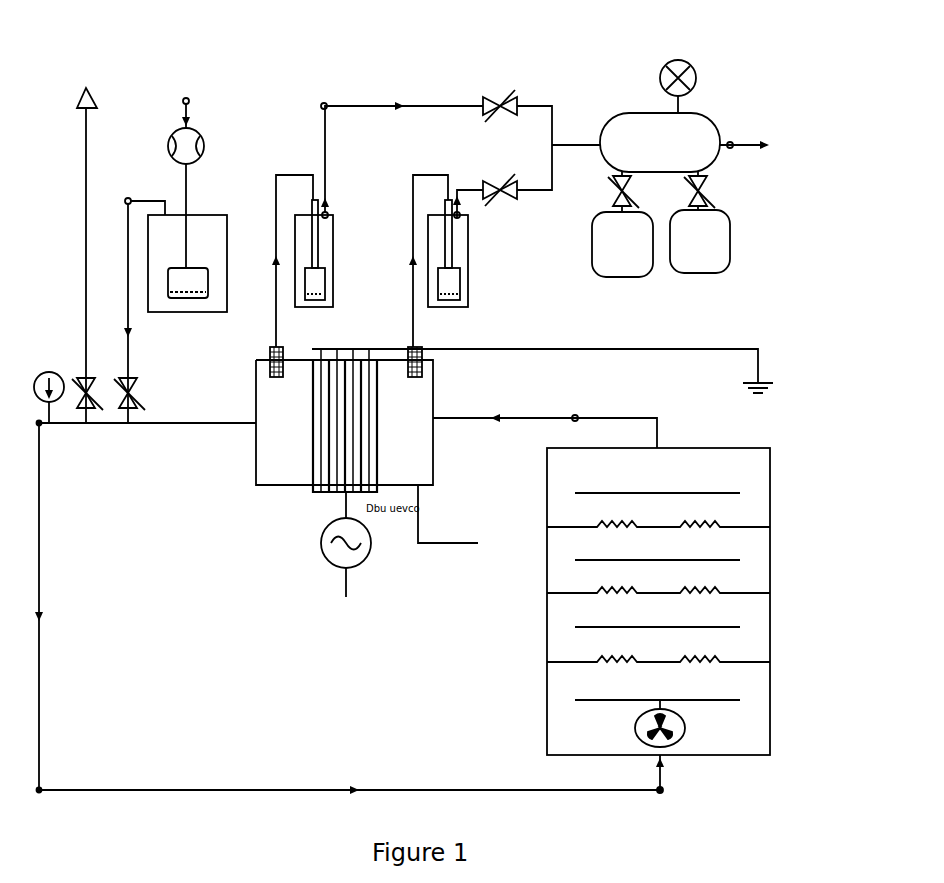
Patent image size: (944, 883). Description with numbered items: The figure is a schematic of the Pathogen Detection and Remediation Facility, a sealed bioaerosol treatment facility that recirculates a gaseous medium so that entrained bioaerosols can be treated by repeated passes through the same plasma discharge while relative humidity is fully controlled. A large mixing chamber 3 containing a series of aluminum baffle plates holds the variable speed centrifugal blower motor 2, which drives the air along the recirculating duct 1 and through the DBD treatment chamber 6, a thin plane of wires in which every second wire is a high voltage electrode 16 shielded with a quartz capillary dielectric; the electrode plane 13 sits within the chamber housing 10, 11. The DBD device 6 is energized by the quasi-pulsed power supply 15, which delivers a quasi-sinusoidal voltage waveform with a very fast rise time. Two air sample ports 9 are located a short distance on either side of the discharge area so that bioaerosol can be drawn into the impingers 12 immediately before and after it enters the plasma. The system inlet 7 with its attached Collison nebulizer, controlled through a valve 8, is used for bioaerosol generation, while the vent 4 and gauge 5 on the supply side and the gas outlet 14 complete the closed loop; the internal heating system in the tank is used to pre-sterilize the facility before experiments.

The inlet pipe 1 is at (558, 405).
The variable speed centrifugal blower motor 2 is at (682, 737).
The tank 3 is at (545, 682).
The vent valve 4 is at (92, 96).
The internal heating system 5 is at (55, 372).
The DBD device 6 is at (457, 522).
The sampling container 7 is at (196, 313).
The valve 8 is at (195, 112).
The air sample ports 9 is at (413, 345).
The reactor vessel 10 is at (437, 427).
The reactor housing 11 is at (256, 428).
The impinger 12 is at (437, 287).
The electrode plates 13 is at (313, 468).
The gas outlet 14 is at (706, 168).
The quasi-pulsed power supply 15 is at (346, 558).
The high voltage electrode 16 is at (357, 348).